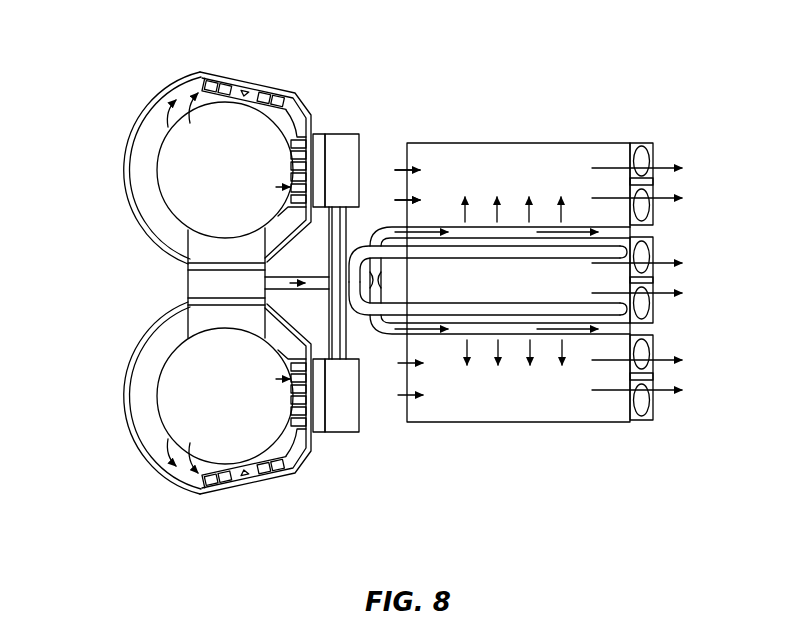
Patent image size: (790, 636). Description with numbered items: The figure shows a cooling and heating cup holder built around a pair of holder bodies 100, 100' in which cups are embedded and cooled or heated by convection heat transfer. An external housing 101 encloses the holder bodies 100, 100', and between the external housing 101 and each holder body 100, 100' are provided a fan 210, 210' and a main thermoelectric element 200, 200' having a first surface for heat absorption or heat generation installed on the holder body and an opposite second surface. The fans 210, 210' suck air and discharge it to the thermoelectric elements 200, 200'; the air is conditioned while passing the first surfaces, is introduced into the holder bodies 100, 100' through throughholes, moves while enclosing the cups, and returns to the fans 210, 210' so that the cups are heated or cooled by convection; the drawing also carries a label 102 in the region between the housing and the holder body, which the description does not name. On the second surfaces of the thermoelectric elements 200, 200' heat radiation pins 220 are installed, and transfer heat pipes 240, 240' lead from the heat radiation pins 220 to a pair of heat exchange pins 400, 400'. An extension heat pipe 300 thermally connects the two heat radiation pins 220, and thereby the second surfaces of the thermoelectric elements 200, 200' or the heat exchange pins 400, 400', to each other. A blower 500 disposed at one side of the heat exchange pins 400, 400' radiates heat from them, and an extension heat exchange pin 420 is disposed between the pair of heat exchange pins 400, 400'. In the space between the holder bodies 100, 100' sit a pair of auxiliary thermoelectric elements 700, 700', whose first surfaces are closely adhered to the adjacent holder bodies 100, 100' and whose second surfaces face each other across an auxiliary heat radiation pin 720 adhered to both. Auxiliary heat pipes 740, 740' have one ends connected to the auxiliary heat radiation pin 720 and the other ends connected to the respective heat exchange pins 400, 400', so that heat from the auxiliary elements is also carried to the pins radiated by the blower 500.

The holder body 100 is at (165, 170).
The holder body 100' is at (164, 396).
The external housing 101 is at (127, 138).
The air passage 102 is at (292, 186).
The thermoelectric element 200 is at (320, 118).
The thermoelectric element 200' is at (332, 448).
The fan 210 is at (254, 118).
The fan 210' is at (254, 450).
The heat radiation pin 220 is at (345, 134).
The transfer heat pipe 240 is at (488, 383).
The transfer heat pipe 240' is at (488, 180).
The extension heat pipe 300 is at (337, 340).
The heat exchange pin 400 is at (512, 146).
The heat exchange pin 400' is at (514, 364).
The extension heat exchange pin 420 is at (602, 286).
The blower 500 is at (652, 144).
The auxiliary thermoelectric element 700 is at (160, 258).
The auxiliary thermoelectric element 700' is at (160, 312).
The auxiliary heat radiation pin 720 is at (200, 288).
The auxiliary heat pipe 740 is at (500, 168).
The auxiliary heat pipe 740' is at (500, 395).